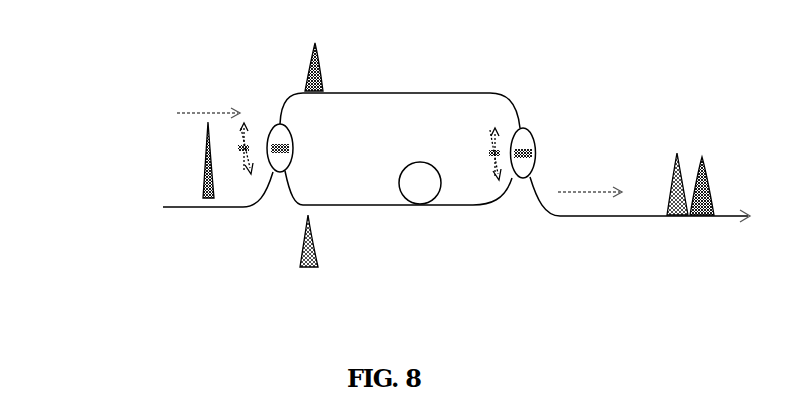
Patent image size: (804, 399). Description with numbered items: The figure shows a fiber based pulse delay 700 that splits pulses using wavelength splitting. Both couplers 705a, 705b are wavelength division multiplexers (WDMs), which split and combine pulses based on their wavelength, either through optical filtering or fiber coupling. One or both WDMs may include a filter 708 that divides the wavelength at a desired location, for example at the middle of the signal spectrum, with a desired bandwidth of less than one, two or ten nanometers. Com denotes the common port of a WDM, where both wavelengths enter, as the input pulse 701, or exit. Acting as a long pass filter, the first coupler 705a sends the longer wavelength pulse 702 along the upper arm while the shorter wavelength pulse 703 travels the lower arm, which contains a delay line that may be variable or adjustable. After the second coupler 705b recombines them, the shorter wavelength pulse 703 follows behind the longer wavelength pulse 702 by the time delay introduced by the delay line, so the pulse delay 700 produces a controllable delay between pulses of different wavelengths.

The pulse delay 700 is at (126, 223).
The input pulse 701 is at (203, 177).
The longer wavelength pulse 702 is at (308, 75).
The shorter wavelength pulse 703 is at (300, 245).
The first coupler 705a is at (278, 123).
The second coupler 705b is at (523, 129).
The filter 708 is at (250, 179).